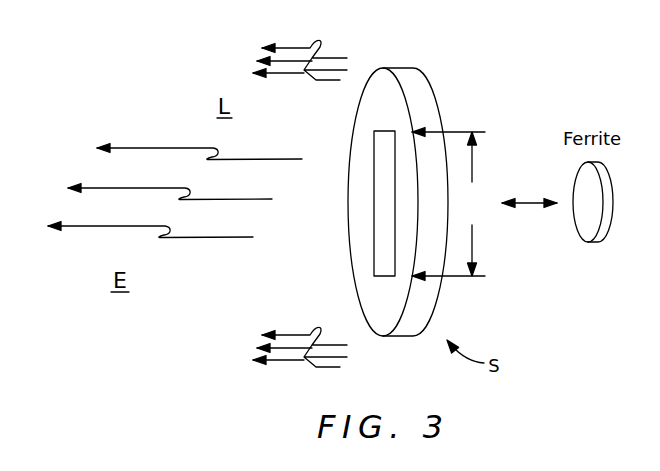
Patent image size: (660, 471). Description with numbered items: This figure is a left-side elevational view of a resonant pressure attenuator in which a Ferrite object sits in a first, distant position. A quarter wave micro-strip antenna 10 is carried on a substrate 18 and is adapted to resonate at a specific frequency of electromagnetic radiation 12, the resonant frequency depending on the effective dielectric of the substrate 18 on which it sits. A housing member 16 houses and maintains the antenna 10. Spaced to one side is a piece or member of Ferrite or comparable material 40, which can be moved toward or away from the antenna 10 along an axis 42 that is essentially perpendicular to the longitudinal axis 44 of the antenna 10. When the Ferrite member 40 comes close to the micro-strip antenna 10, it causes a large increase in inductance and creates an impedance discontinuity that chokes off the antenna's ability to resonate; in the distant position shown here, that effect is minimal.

The antenna member 10 is at (385, 138).
The electromagnetic radiation 12 is at (175, 187).
The housing member 16 is at (343, 278).
The substrate 18 is at (392, 100).
The Ferrite member 40 is at (592, 243).
The axis 42 is at (527, 203).
The longitudinal axis 44 is at (482, 254).